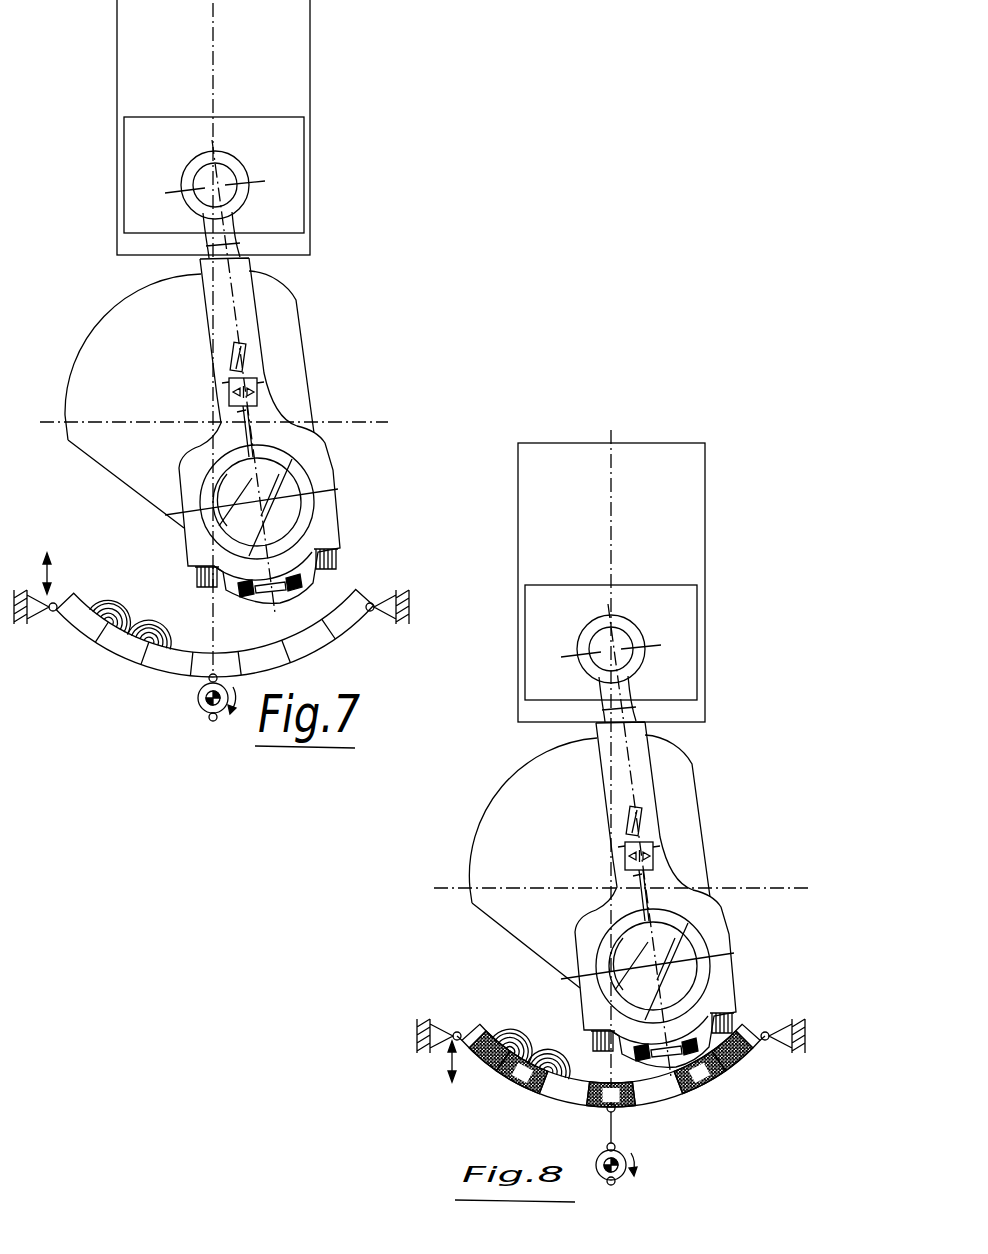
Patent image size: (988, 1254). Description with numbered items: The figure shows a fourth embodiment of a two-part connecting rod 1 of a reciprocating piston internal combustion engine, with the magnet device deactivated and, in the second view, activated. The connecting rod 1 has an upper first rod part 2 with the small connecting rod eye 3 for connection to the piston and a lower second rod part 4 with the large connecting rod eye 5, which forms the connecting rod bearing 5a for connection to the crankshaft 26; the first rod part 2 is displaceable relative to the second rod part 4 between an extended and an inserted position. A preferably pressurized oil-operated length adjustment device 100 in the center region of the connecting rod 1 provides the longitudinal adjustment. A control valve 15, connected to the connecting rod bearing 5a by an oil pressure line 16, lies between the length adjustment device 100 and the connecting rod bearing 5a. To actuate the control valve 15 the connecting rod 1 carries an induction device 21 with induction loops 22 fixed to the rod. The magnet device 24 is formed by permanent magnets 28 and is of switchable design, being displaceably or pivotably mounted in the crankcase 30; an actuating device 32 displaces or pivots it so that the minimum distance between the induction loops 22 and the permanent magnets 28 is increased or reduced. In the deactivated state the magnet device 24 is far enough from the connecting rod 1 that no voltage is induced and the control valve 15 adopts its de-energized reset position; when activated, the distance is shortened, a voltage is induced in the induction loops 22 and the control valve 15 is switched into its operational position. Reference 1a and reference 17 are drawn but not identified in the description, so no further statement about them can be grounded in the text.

In FIG. 7, the connecting rod 1 is at (265, 351).
In FIG. 8, the connecting rod 1 is at (683, 861).
In FIG. 7, the counterweight lobe of connecting rod 1a is at (234, 314).
In FIG. 8, the counterweight lobe of connecting rod 1a is at (606, 859).
In FIG. 7, the first rod part 2 is at (232, 228).
In FIG. 8, the first rod part 2 is at (667, 691).
In FIG. 7, the small connecting rod eye 3 is at (224, 187).
In FIG. 7, the second rod part 4 is at (328, 457).
In FIG. 8, the second rod part 4 is at (683, 966).
In FIG. 7, the large connecting rod eye 5 is at (265, 475).
In FIG. 8, the large connecting rod eye 5 is at (691, 932).
In FIG. 7, the connecting rod bearing 5a is at (265, 475).
In FIG. 8, the connecting rod bearing 5a is at (534, 964).
In FIG. 7, the control valve 15 is at (228, 390).
In FIG. 8, the control valve 15 is at (688, 842).
In FIG. 7, the oil pressure line 16 is at (240, 420).
In FIG. 8, the oil pressure line 16 is at (597, 895).
In FIG. 7, the big-end housing 17 is at (335, 502).
In FIG. 8, the big-end housing 17 is at (632, 978).
In FIG. 7, the induction device 21 is at (336, 577).
In FIG. 8, the induction device 21 is at (640, 1041).
In FIG. 7, the induction loops 22 is at (251, 595).
In FIG. 8, the induction loops 22 is at (699, 1079).
In FIG. 7, the magnet device 24 is at (153, 659).
In FIG. 8, the magnet device 24 is at (705, 1092).
In FIG. 7, the crankshaft 26 is at (290, 497).
In FIG. 8, the crankshaft 26 is at (675, 969).
In FIG. 7, the permanent magnets 28 is at (70, 592).
In FIG. 8, the permanent magnets 28 is at (463, 1032).
In FIG. 7, the crankcase 30 is at (17, 620).
In FIG. 8, the crankcase 30 is at (420, 1050).
In FIG. 7, the actuating device 32 is at (204, 706).
In FIG. 8, the actuating device 32 is at (627, 1177).
In FIG. 7, the length adjustment device 100 is at (231, 352).
In FIG. 8, the length adjustment device 100 is at (591, 827).